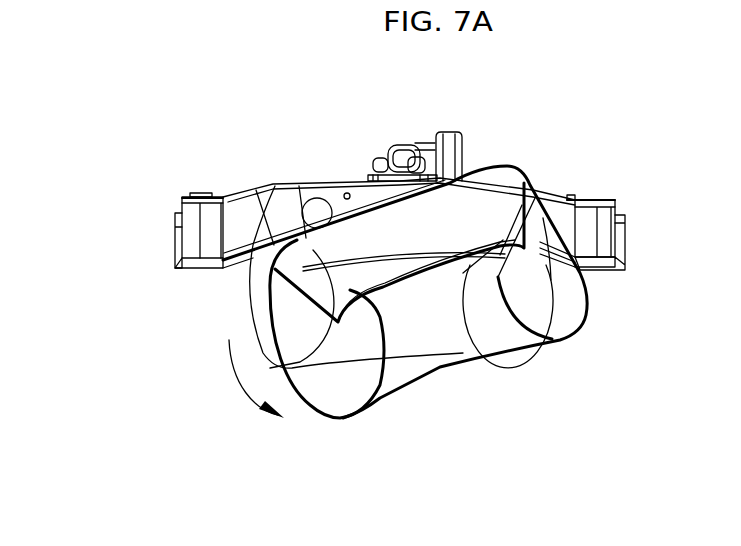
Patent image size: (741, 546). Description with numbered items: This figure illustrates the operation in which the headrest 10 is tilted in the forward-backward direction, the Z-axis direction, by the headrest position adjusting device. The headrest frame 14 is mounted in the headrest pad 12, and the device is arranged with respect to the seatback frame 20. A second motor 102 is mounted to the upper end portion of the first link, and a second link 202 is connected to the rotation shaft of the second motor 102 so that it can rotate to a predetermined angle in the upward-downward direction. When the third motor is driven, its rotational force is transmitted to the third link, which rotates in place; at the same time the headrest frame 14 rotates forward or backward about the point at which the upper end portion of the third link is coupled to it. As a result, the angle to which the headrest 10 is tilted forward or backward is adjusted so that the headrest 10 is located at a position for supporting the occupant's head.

The headrest 10 is at (386, 412).
The headrest pad 12 is at (444, 368).
The headrest frame 14 is at (405, 278).
The seatback frame 20 is at (588, 235).
The second motor 102 is at (443, 130).
The second link 202 is at (488, 150).